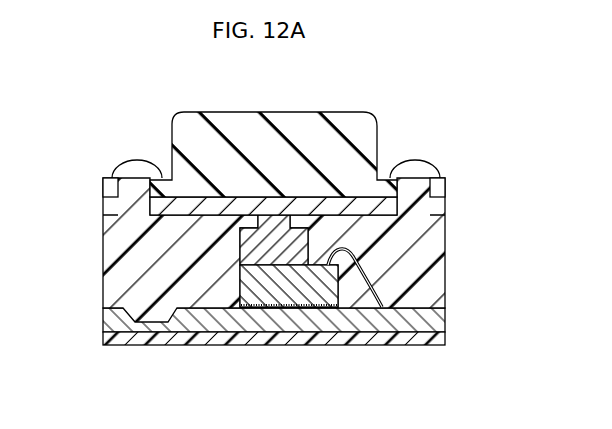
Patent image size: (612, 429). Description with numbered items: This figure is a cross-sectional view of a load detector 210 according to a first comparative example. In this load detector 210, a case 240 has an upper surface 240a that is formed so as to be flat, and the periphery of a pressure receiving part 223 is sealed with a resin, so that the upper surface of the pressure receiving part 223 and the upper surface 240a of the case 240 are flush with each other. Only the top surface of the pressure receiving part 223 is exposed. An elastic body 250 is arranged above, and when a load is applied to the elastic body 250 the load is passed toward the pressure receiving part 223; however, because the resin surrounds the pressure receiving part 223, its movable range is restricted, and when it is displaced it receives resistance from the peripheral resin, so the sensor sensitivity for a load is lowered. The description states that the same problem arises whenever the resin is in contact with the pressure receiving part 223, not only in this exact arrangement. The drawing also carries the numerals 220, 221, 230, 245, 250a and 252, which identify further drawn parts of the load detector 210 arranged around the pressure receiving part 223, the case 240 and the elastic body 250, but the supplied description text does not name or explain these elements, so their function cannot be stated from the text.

The load detector 210 is at (472, 136).
The image sensor unit 220 is at (340, 380).
The spacer frame 221 is at (281, 253).
The pressure receiving part 223 is at (265, 215).
The image sensor chip 230 is at (312, 290).
The case 240 is at (420, 260).
The upper surface 240a is at (108, 209).
The adhesive 245 is at (125, 167).
The elastic body 250 is at (240, 113).
The lens flange 250a is at (273, 135).
The cover glass 252 is at (183, 208).